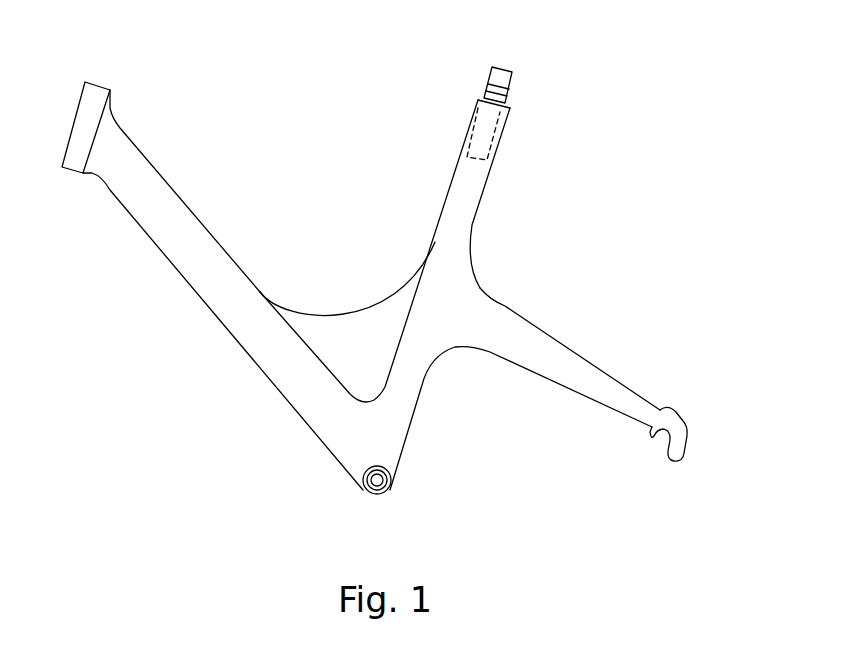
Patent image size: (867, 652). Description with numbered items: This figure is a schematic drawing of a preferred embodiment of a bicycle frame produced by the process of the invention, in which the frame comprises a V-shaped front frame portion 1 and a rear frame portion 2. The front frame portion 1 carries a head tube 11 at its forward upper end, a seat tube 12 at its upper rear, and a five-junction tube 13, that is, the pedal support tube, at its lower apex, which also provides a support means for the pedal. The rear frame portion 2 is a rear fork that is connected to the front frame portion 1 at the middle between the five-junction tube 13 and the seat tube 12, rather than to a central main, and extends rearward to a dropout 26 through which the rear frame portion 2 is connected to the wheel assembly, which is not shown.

The front frame portion 1 is at (230, 384).
The rear frame portion 2 is at (550, 347).
The head tube 11 is at (90, 100).
The seat tube 12 is at (500, 73).
The five-junction tube 13 is at (362, 492).
The dropout 26 is at (683, 422).